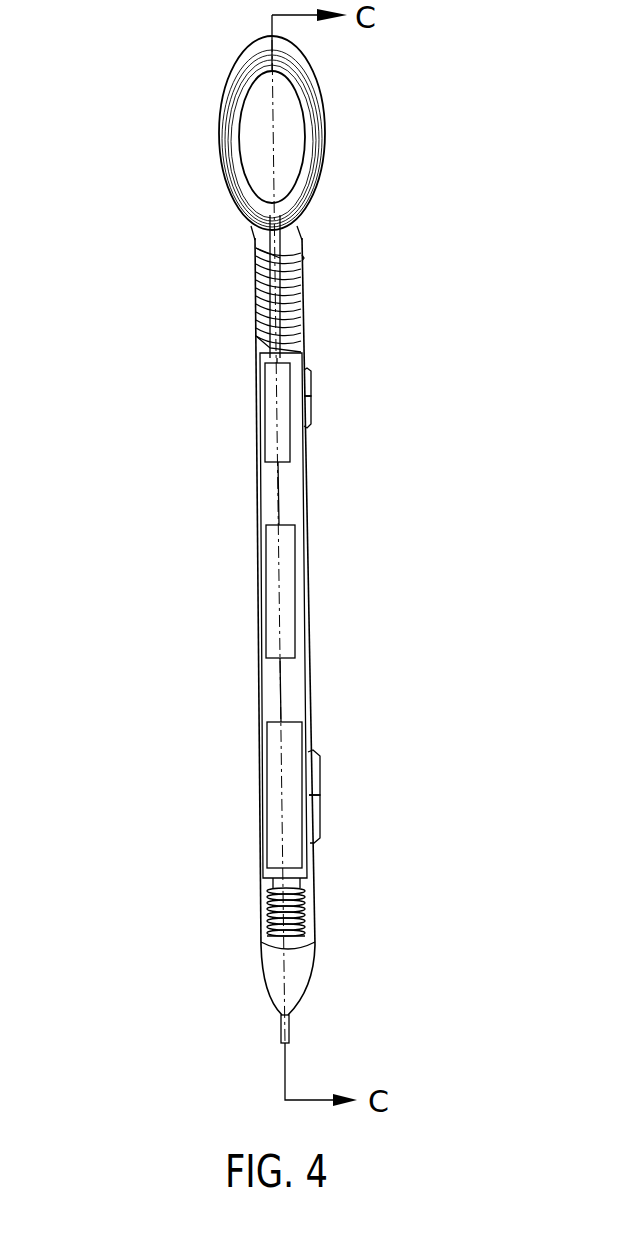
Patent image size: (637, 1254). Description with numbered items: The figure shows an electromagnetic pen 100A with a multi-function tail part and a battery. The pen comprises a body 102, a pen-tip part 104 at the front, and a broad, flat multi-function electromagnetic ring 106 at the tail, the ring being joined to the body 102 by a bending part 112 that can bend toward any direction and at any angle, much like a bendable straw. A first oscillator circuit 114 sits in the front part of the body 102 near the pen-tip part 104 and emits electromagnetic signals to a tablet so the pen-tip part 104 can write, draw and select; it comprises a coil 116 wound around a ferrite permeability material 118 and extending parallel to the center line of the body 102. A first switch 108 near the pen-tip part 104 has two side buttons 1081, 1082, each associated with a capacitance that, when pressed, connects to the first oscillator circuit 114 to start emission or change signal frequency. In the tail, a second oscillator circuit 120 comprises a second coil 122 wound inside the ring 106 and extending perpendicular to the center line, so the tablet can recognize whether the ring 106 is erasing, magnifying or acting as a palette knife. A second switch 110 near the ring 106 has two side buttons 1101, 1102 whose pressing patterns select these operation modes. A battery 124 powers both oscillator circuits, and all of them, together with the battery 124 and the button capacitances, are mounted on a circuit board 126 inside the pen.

The electromagnetic pen with a multi-function tail part and a battery 100A is at (116, 33).
The body 102 is at (310, 917).
The pen-tip part 104 is at (282, 1028).
The multi-function electromagnetic ring 106 is at (243, 222).
The first switch 108 is at (414, 762).
The side button 1081 is at (312, 815).
The side button 1082 is at (312, 781).
The second switch 110 is at (411, 361).
The side button 1101 is at (308, 417).
The side button 1102 is at (308, 378).
The bending part 112 is at (272, 293).
The first oscillator circuit 114 is at (283, 800).
The coil 116 is at (268, 905).
The permeability material 118 is at (282, 940).
The second oscillator circuit 120 is at (270, 413).
The second coil 122 is at (228, 134).
The battery 124 is at (278, 586).
The circuit board 126 is at (270, 498).